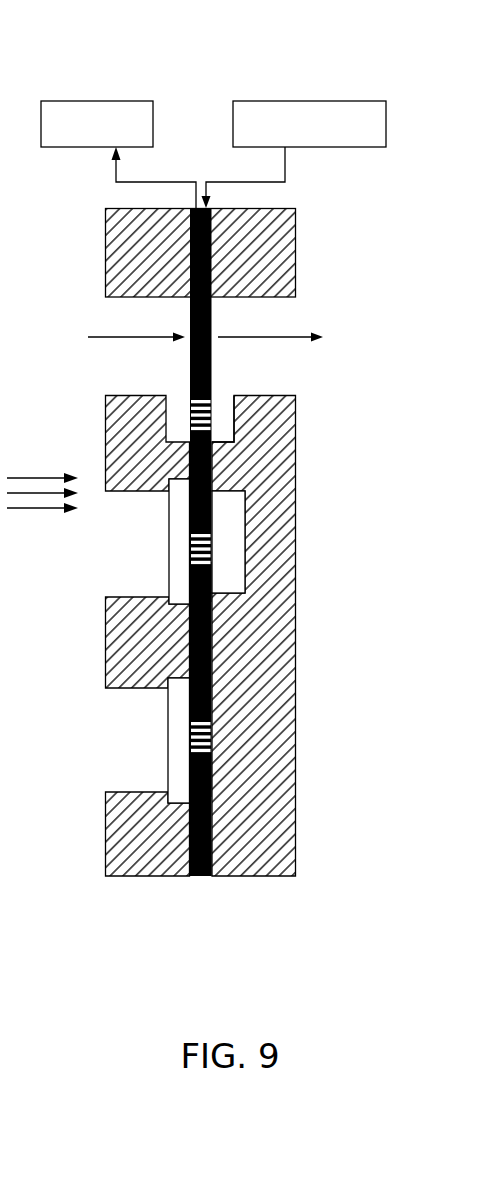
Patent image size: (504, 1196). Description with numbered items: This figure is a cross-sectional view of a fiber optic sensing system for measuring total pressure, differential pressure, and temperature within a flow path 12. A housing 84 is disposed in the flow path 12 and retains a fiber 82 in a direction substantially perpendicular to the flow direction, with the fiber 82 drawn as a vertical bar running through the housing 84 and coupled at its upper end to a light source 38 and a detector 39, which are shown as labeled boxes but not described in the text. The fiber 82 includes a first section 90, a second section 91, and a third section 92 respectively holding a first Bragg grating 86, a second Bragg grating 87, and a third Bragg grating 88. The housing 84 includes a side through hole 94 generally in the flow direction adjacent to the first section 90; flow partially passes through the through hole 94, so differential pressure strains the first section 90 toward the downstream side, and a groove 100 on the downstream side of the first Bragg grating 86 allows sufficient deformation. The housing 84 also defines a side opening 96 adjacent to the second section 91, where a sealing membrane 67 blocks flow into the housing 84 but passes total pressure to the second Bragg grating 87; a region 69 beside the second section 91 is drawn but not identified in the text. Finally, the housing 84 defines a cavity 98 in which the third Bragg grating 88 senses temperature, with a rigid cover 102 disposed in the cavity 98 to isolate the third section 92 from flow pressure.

The flow path 12 is at (25, 477).
The light source 38 is at (386, 121).
The detector 39 is at (98, 100).
The sealing membrane 67 is at (167, 565).
The recess 69 is at (233, 567).
The fiber 82 is at (198, 877).
The housing 84 is at (120, 262).
The first Bragg grating 86 is at (205, 415).
The second Bragg grating 87 is at (205, 540).
The third Bragg grating 88 is at (208, 727).
The first section 90 is at (212, 370).
The second section 91 is at (213, 591).
The third section 92 is at (212, 760).
The side through hole 94 is at (115, 376).
The side opening 96 is at (115, 585).
The cavity 98 is at (115, 783).
The groove 100 is at (227, 428).
The rigid cover 102 is at (167, 763).